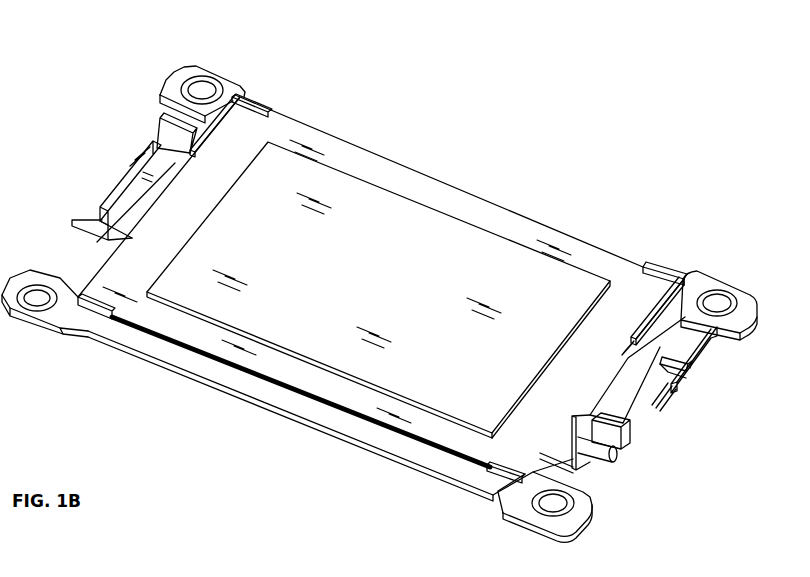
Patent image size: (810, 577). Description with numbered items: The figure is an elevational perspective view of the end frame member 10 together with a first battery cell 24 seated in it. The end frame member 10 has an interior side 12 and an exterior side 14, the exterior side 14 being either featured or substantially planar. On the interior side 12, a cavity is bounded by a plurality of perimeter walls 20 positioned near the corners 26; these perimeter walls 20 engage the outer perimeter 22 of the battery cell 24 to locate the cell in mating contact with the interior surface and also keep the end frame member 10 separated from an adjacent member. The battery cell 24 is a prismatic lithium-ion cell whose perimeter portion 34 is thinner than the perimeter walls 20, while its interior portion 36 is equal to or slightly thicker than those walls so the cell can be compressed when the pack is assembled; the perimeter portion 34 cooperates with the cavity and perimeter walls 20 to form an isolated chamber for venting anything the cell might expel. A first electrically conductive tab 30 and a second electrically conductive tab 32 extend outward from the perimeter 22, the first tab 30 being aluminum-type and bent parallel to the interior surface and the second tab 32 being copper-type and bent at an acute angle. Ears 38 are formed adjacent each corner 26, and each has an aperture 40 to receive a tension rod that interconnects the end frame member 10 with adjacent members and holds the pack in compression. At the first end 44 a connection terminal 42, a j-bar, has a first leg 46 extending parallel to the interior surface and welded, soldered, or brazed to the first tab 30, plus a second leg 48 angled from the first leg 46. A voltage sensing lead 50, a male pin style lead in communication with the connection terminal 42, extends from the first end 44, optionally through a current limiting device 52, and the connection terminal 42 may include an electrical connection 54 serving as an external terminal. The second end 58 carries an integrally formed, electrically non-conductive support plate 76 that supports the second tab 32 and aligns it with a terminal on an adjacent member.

The end frame member 10 is at (520, 128).
The interior side 12 is at (403, 162).
The exterior side 14 is at (340, 438).
The perimeter walls 20 is at (275, 110).
The outer perimeter 22 is at (463, 465).
The battery cell 24 is at (347, 281).
The corners 26 is at (238, 116).
The first electrically conductive tab 30 is at (620, 390).
The second electrically conductive tab 32 is at (95, 207).
The perimeter portion 34 is at (200, 335).
The interior portion 36 is at (310, 337).
The ears 38 is at (748, 297).
The aperture 40 is at (722, 305).
The connection terminal 42 is at (676, 390).
The first end 44 is at (680, 338).
The first leg 46 is at (622, 418).
The second leg 48 is at (658, 400).
The voltage sensing lead 50 is at (692, 362).
The current limiting device 52 is at (676, 371).
The electrical connection 54 is at (600, 463).
The second end 58 is at (105, 245).
The support plate 76 is at (107, 182).